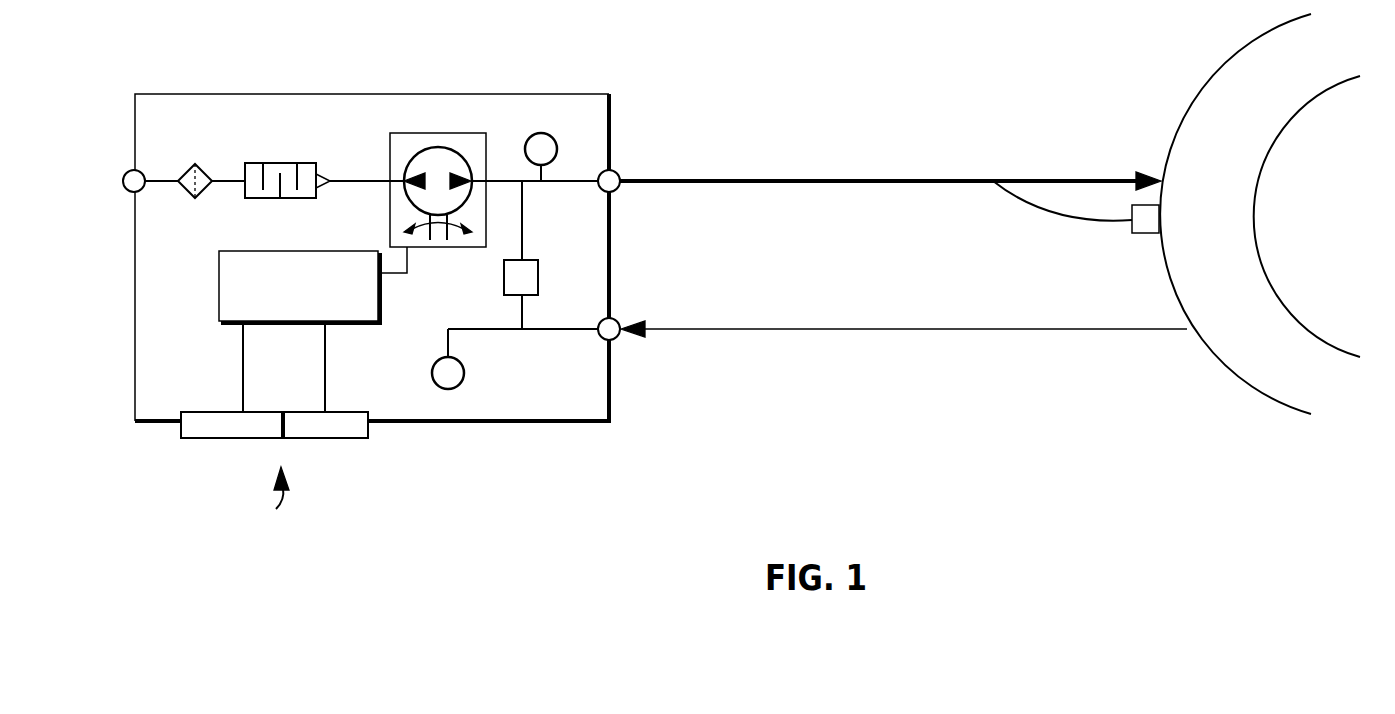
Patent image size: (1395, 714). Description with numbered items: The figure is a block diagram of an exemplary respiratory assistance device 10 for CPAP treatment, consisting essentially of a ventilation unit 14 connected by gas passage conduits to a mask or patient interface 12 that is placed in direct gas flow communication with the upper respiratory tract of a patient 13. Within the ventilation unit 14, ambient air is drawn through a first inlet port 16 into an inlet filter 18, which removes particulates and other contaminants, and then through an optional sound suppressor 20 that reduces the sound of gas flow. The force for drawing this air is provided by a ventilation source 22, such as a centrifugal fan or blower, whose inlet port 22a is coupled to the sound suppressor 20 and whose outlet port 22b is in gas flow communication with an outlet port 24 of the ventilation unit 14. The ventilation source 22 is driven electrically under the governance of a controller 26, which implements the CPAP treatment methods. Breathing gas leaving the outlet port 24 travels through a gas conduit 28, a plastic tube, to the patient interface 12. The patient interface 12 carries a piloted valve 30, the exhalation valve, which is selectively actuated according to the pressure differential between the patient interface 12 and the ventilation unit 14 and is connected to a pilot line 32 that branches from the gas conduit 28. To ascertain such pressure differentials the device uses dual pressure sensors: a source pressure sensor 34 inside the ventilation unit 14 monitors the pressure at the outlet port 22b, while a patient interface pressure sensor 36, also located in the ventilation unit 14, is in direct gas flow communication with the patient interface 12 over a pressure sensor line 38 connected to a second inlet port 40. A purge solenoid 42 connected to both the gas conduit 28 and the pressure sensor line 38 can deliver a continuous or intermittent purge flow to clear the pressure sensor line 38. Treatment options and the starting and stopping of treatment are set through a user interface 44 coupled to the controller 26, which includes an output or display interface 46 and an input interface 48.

The respiratory assistance device 10 is at (796, 463).
The patient interface 12 is at (1224, 171).
The patient 13 is at (1339, 231).
The ventilation unit 14 is at (386, 425).
The first inlet port 16 is at (128, 194).
The inlet filter 18 is at (195, 199).
The sound suppressor 20 is at (270, 199).
The ventilation source 22 is at (442, 190).
The inlet port 22a is at (405, 185).
The outlet port 22b is at (473, 178).
The outlet port 24 is at (620, 172).
The controller 26 is at (219, 282).
The gas conduit 28 is at (836, 178).
The piloted valve 30 is at (1148, 221).
The pilot line 32 is at (1062, 211).
The source pressure sensor 34 is at (557, 149).
The patient interface pressure sensor 36 is at (465, 373).
The pressure sensor line 38 is at (808, 327).
The second inlet port 40 is at (620, 321).
The purge solenoid 42 is at (540, 277).
The user interface 44 is at (275, 497).
The output interface 46 is at (240, 438).
The input interface 48 is at (325, 438).